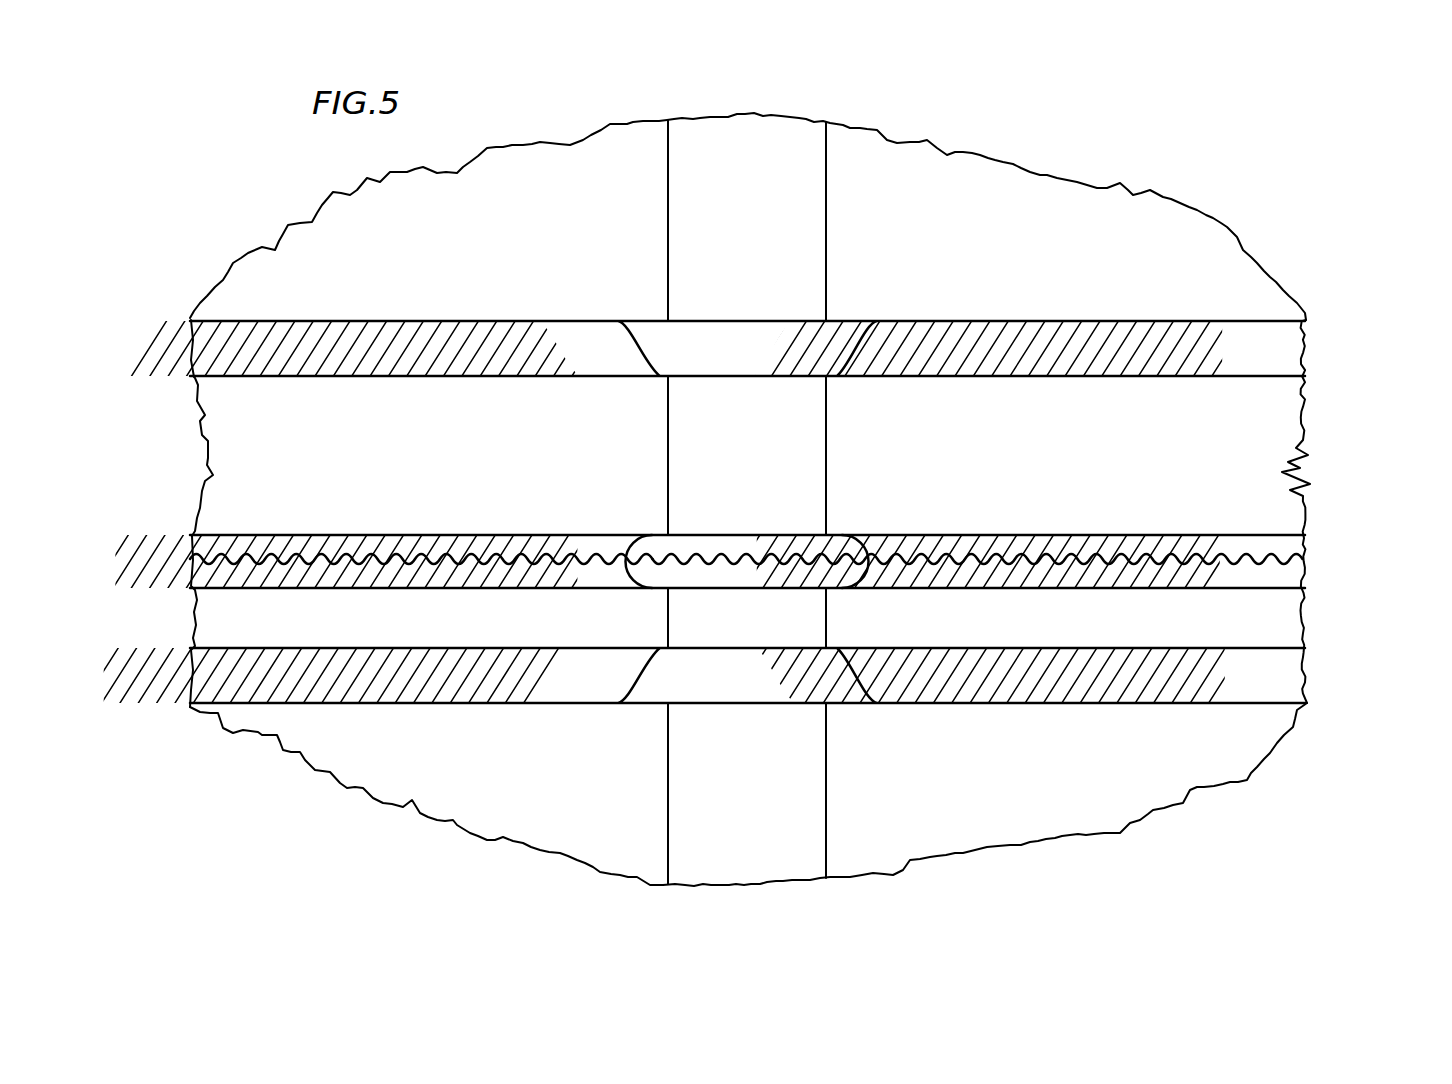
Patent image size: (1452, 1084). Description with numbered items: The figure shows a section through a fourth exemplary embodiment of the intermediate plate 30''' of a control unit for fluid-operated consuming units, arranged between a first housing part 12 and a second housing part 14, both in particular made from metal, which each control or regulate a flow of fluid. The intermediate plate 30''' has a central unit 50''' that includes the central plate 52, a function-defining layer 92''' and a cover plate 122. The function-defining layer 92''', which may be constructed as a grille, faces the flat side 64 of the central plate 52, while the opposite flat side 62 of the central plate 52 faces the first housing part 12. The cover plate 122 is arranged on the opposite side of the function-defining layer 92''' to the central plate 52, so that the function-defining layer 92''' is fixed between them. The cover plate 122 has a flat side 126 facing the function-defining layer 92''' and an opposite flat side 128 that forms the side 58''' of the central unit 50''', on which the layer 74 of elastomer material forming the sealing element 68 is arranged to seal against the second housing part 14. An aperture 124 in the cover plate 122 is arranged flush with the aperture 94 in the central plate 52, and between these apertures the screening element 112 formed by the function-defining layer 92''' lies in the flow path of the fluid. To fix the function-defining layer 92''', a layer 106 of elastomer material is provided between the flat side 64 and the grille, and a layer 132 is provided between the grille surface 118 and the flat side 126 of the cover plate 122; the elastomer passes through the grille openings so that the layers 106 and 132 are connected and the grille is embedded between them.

The first housing part 12 is at (978, 182).
The second housing part 14 is at (938, 834).
The intermediate plate 30''' is at (1194, 194).
The central unit 50''' is at (1331, 401).
The central plate 52 is at (1280, 468).
The side of the central unit 58''' is at (726, 541).
The flat side 62 is at (1036, 375).
The flat side 64 is at (1120, 545).
The sealing element 68 is at (985, 668).
The layer of elastomer material 74 is at (1085, 650).
The function-defining layer 92''' is at (792, 569).
The aperture 94 is at (668, 425).
The layer of elastomer material 106 is at (355, 545).
The screening element 112 is at (748, 548).
The grille surface 118 is at (313, 563).
The cover plate 122 is at (1275, 620).
The aperture 124 is at (668, 609).
The flat side 126 is at (1185, 585).
The flat side 128 is at (1225, 650).
The layer 132 is at (366, 573).